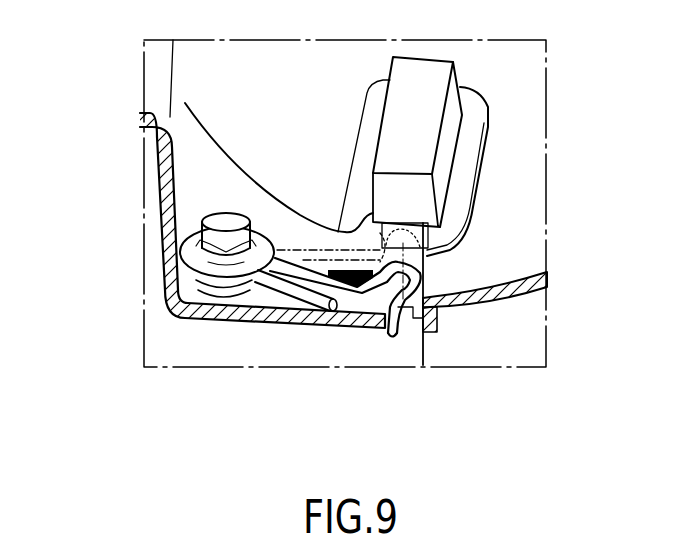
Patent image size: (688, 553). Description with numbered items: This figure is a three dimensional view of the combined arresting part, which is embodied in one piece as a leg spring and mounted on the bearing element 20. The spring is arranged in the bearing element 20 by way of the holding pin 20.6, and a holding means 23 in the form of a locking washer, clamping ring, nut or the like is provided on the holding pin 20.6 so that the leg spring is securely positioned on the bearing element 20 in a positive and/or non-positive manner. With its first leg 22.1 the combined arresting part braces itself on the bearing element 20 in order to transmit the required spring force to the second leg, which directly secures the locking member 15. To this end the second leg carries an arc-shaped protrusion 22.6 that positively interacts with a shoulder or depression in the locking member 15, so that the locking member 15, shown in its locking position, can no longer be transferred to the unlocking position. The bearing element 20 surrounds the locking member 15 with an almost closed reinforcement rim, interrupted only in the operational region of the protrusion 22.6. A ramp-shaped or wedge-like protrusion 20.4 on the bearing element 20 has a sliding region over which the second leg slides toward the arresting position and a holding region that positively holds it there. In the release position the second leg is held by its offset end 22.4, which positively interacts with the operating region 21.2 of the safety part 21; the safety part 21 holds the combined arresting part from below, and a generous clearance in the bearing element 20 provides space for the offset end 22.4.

The locking member 15 is at (418, 118).
The bearing element 20 is at (197, 153).
The protrusion 20.4 is at (352, 278).
The holding pin 20.6 is at (200, 222).
The safety part 21 is at (182, 340).
The operating region 21.2 is at (403, 330).
The first leg 22.1 is at (277, 285).
The offset end 22.4 is at (388, 338).
The arc-shaped protrusion 22.6 is at (425, 272).
The holding means 23 is at (183, 255).